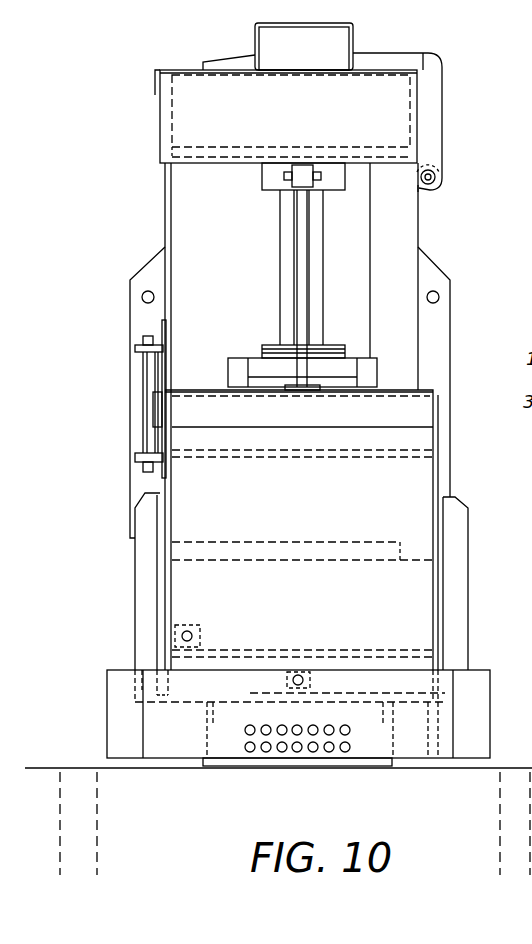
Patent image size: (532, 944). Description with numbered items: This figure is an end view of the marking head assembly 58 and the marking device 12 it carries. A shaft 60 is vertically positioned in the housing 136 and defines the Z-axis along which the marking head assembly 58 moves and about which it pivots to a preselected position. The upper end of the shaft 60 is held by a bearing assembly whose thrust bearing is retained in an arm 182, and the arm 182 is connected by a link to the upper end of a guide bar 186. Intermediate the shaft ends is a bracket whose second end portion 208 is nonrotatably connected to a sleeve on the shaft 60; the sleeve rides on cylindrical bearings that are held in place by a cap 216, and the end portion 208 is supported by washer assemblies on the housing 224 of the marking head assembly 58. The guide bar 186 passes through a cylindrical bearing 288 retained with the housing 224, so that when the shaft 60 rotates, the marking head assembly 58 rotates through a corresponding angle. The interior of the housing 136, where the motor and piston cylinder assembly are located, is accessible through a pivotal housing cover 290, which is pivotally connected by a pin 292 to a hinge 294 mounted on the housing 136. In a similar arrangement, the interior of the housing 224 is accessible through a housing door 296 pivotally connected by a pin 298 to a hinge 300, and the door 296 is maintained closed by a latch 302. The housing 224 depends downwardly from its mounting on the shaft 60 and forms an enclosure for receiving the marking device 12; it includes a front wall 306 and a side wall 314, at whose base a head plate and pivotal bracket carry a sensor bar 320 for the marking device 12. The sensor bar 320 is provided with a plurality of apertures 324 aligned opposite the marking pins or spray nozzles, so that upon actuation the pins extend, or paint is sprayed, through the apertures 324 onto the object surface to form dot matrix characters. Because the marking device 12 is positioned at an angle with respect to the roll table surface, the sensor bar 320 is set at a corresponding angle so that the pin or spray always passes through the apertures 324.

The marking device 12 is at (337, 768).
The marking head assembly 58 is at (447, 475).
The shaft 60 is at (280, 237).
The housing 136 is at (165, 211).
The arm 182 is at (262, 185).
The guide bar 186 is at (297, 273).
The second end portion of bracket 208 is at (228, 370).
The cap 216 is at (265, 345).
The housing of the marking head assembly 224 is at (310, 499).
The cylindrical bearing 288 is at (293, 389).
The housing cover 290 is at (256, 51).
The pin 292 is at (437, 178).
The hinge 294 is at (418, 188).
The housing door 296 is at (162, 325).
The pin 298 is at (145, 380).
The hinge 300 is at (143, 347).
The latch 302 is at (155, 418).
The front wall 306 is at (420, 576).
The side wall 314 is at (443, 627).
The sensor bar 320 is at (480, 718).
The apertures 324 is at (250, 752).